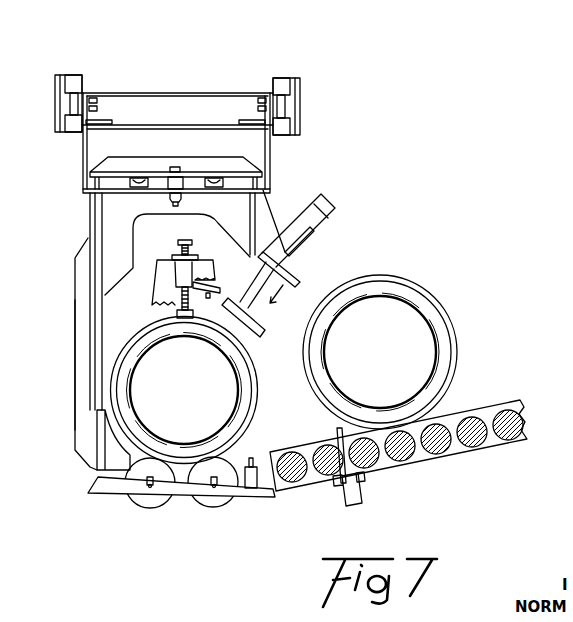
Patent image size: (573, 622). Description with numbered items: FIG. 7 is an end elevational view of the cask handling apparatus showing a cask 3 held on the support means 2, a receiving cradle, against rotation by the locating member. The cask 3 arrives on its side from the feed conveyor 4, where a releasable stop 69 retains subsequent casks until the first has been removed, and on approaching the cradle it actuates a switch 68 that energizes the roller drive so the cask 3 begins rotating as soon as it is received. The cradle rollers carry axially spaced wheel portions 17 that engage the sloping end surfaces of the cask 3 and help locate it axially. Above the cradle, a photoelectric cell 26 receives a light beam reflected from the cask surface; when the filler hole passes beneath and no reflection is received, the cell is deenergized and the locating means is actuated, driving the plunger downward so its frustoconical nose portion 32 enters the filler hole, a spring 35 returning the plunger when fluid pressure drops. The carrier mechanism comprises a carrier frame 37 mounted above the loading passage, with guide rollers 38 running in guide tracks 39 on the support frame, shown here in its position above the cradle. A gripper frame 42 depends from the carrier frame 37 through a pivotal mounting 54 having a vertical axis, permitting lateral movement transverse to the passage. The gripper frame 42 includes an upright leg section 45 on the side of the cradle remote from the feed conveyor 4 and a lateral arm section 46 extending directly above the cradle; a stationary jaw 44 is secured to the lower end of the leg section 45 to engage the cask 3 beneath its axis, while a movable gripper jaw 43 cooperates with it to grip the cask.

The support means 2 is at (107, 508).
The cask 3 is at (145, 386).
The feed conveyor 4 is at (416, 475).
The wheel portions 17 is at (200, 503).
The photoelectric cell 26 is at (250, 273).
The frustoconical nose portion 32 is at (183, 320).
The spring 35 is at (178, 246).
The carrier frame 37 is at (95, 206).
The guide rollers 38 is at (73, 107).
The guide tracks 39 is at (72, 77).
The gripper frame 42 is at (67, 289).
The gripper jaw 43 is at (250, 333).
The stationary jaw 44 is at (115, 440).
The upright leg section 45 is at (86, 343).
The lateral arm section 46 is at (205, 212).
The pivotal mounting 54 is at (170, 200).
The switch 68 is at (257, 488).
The releasable stop 69 is at (330, 438).